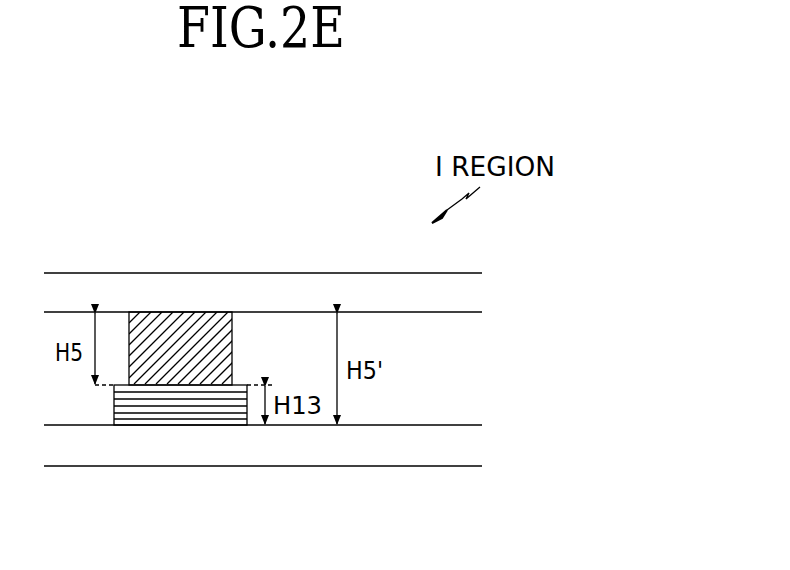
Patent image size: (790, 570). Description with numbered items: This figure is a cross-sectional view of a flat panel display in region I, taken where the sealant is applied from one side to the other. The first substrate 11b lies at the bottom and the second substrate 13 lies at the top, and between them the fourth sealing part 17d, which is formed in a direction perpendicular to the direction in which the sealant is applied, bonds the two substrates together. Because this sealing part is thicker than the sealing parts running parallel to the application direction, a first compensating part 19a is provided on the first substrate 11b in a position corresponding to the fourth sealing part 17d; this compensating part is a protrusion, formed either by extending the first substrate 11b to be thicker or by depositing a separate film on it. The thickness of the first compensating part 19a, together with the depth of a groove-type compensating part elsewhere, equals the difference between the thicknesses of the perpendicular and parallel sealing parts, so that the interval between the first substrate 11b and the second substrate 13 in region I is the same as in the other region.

The fourth sealing part 17d is at (177, 333).
The second substrate 13 is at (302, 293).
The first compensating part 19a is at (177, 407).
The first substrate 11b is at (302, 448).